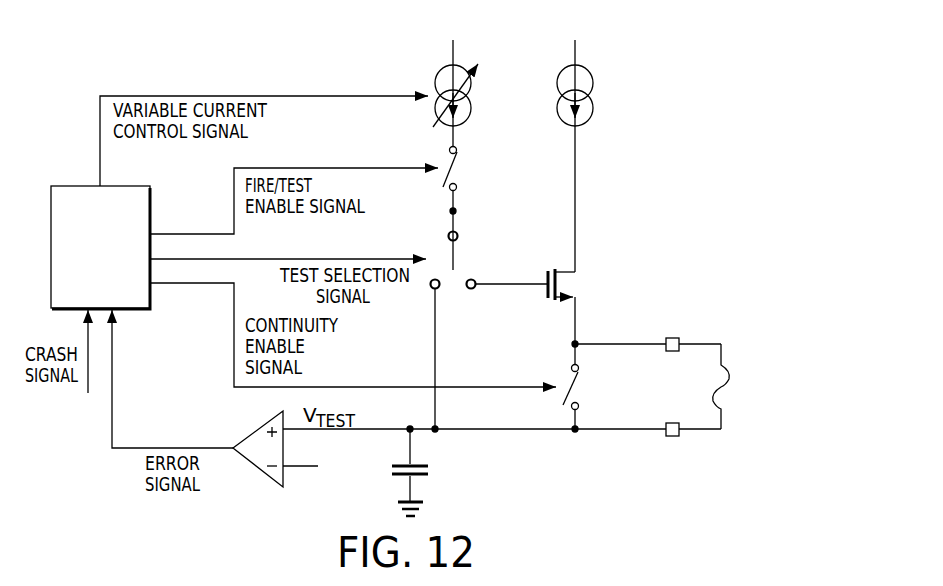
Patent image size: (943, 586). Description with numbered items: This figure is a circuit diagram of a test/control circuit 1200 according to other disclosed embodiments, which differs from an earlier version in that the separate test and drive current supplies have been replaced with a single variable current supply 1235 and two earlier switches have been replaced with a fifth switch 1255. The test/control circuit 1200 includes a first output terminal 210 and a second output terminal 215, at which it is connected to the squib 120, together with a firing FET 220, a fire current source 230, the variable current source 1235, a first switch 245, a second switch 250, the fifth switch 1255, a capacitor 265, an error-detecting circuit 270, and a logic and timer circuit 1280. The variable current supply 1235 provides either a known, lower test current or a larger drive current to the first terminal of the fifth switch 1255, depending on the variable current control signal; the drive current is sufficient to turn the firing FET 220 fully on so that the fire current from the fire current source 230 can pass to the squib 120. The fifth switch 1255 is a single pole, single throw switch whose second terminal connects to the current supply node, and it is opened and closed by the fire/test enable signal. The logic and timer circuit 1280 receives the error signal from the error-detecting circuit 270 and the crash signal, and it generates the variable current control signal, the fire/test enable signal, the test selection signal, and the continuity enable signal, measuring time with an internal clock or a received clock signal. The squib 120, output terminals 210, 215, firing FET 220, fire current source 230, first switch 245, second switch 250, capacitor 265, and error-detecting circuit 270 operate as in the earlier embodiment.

The test/control circuit 1200 is at (136, 37).
The logic and timer circuit 1280 is at (72, 186).
The variable current supply 1235 is at (441, 62).
The fire current source 230 is at (562, 62).
The fifth switch 1255 is at (456, 169).
The first switch 245 is at (459, 262).
The firing FET 220 is at (553, 300).
The second switch 250 is at (579, 386).
The first output terminal 210 is at (675, 337).
The second output terminal 215 is at (673, 440).
The squib 120 is at (733, 377).
The capacitor 265 is at (431, 474).
The error-detecting circuit 270 is at (252, 433).